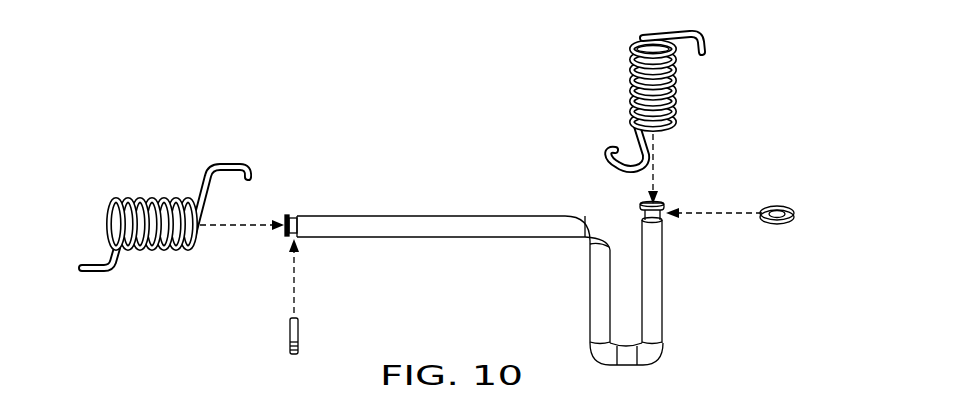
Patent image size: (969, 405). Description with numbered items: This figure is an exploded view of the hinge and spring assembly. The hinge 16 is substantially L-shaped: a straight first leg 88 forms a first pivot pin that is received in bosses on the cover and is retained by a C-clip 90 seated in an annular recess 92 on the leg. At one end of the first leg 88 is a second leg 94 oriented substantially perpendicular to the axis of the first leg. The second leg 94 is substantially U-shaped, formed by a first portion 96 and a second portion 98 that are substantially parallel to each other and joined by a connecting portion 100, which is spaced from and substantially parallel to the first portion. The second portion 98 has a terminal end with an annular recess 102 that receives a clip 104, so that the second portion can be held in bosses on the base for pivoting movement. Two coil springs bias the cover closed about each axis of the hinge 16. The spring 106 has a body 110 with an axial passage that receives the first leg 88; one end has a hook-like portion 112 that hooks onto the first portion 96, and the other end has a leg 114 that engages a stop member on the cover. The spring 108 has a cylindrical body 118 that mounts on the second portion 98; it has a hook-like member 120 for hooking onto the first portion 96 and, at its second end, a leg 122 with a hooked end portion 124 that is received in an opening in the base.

The hinge 16 is at (476, 138).
The first leg 88 is at (444, 214).
The C-clip 90 is at (289, 329).
The annular recess 92 is at (296, 214).
The second leg 94 is at (658, 365).
The first portion 96 is at (590, 278).
The second portion 98 is at (662, 275).
The connecting portion 100 is at (625, 343).
The annular recess 102 is at (640, 210).
The clip 104 is at (782, 207).
The spring 106 is at (167, 234).
The spring 108 is at (671, 89).
The body 110 is at (145, 200).
The hook-like portion 112 is at (222, 165).
The leg 114 is at (100, 273).
The cylindrical body 118 is at (667, 105).
The hook-like member 120 is at (605, 160).
The leg 122 is at (667, 31).
The hooked end portion 124 is at (705, 50).